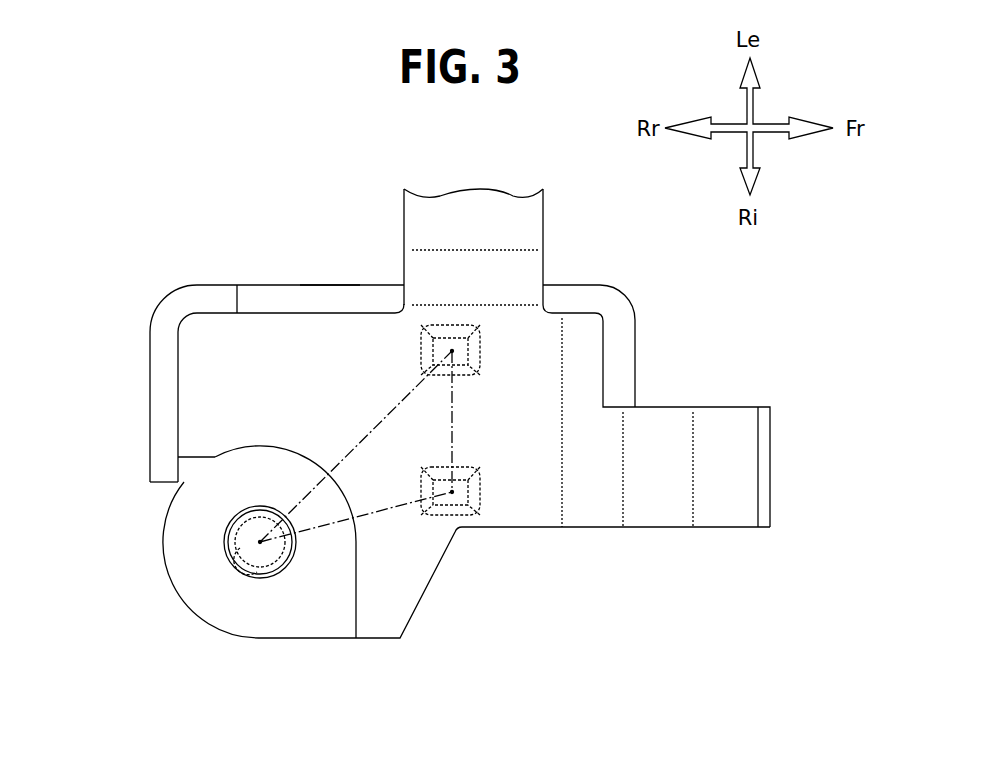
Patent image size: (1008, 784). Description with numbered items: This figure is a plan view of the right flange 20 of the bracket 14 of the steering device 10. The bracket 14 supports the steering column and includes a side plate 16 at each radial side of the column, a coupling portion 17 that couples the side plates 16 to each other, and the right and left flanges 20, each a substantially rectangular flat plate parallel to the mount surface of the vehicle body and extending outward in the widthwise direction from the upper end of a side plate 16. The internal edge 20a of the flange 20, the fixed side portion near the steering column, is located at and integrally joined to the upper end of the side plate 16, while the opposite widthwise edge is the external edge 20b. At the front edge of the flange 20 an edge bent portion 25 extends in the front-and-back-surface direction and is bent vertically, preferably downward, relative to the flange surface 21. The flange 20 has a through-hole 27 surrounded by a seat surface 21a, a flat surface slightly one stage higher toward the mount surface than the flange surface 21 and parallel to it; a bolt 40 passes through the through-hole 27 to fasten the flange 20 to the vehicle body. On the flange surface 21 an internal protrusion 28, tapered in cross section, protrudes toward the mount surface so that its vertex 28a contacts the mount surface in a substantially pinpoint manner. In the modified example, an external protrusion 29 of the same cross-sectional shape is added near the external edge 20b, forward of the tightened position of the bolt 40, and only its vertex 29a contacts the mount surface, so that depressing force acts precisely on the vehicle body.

The steering device 10 is at (150, 120).
The bracket 14 is at (133, 196).
The side plate 16 is at (177, 305).
The coupling portion 17 is at (425, 225).
The flange 20 is at (267, 334).
The internal edge 20a is at (330, 308).
The external edge 20b is at (533, 528).
The flange surface 21 is at (205, 401).
The seat surface 21a is at (196, 557).
The edge bent portion 25 is at (583, 365).
The through-hole 27 is at (258, 572).
The internal protrusion 28 is at (467, 376).
The vertex of internal protrusion 28a is at (460, 350).
The external protrusion 29 is at (467, 518).
The vertex of external protrusion 29a is at (462, 492).
The bolt 40 is at (272, 560).